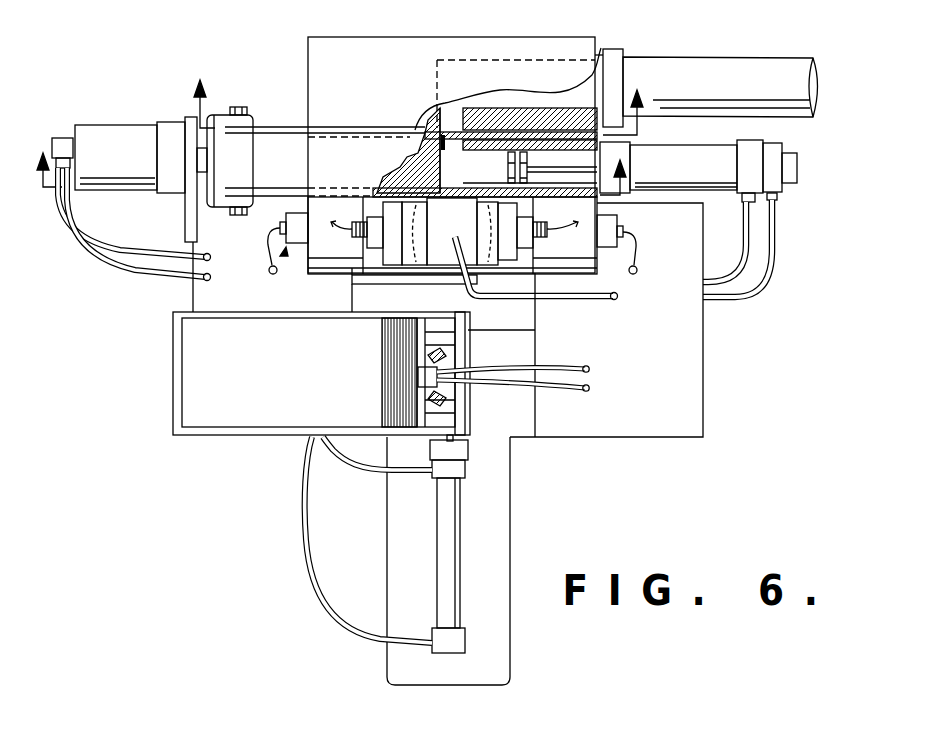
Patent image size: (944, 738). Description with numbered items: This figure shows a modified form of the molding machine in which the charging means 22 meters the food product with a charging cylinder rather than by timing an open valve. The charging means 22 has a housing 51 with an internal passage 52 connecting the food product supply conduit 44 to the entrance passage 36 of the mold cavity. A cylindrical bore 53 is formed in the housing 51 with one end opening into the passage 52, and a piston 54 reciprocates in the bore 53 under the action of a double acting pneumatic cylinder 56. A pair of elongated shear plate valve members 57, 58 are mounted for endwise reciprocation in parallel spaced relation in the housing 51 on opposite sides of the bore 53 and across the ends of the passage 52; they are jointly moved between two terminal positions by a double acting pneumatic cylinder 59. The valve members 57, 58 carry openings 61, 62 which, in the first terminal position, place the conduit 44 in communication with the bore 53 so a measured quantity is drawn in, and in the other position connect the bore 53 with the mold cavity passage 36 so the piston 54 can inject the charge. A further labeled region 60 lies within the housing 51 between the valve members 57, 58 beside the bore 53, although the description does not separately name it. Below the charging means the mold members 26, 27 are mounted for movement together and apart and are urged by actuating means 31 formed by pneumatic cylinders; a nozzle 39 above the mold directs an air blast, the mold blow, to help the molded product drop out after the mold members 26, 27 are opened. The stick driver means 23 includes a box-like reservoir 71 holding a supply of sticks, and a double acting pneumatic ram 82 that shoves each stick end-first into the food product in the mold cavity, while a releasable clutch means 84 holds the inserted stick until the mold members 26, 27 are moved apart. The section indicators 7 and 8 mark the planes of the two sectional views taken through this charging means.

The charging means 22 is at (398, 30).
The food product supply conduit 44 is at (723, 68).
The double acting pneumatic cylinder 56 is at (668, 176).
The section line 7- 7 is at (421, 94).
The section line 8- 8 is at (331, 161).
The double acting pneumatic cylinder 59 is at (131, 131).
The shear plate valve member 58 is at (276, 195).
The shear plate valve member 57 is at (285, 127).
The housing 51 is at (320, 155).
The cylindrical bore 53 is at (495, 152).
The piston 54 is at (538, 152).
The opening 61 is at (447, 123).
The internal passage 52 is at (427, 147).
The opening 62 is at (380, 188).
The chamber 60 is at (454, 200).
The entrance passage 36 is at (477, 207).
The actuating means 31 is at (267, 273).
The releasable clutch means 84 is at (342, 292).
The mold member 26 is at (412, 258).
The nozzle 39 is at (461, 284).
The mold member 27 is at (492, 262).
The box-like reservoir 71 is at (165, 389).
The stick driver means 23 is at (484, 352).
The double acting pneumatic ram 82 is at (460, 564).